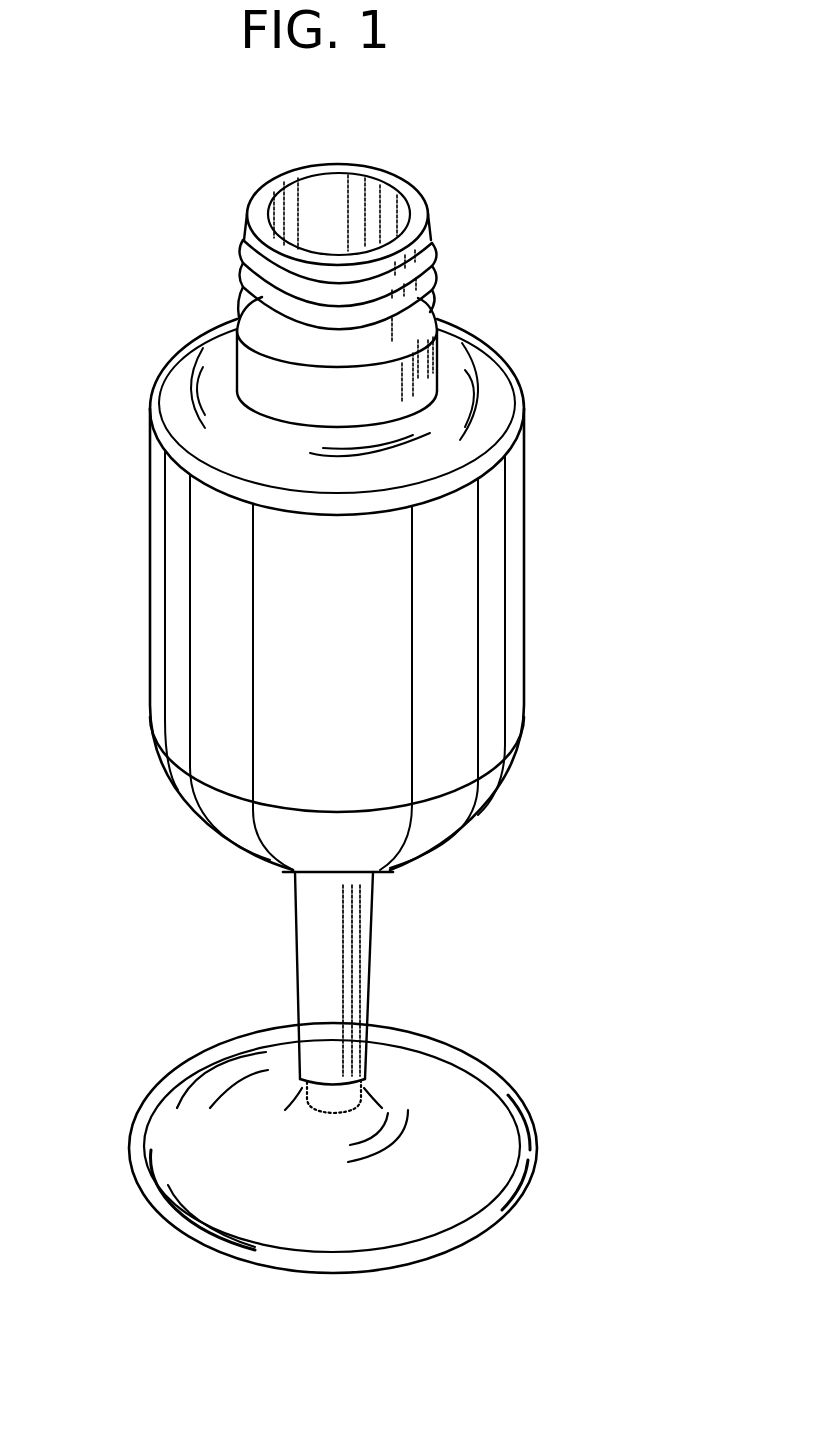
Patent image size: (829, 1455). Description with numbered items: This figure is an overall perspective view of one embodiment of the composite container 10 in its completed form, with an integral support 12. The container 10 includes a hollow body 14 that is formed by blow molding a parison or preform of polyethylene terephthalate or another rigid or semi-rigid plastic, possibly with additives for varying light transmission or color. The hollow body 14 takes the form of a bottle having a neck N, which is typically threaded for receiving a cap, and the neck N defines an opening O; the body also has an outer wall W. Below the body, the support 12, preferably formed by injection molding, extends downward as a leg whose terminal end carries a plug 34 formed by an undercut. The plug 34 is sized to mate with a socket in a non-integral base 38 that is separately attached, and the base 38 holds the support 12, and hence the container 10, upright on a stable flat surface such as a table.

The container 10 is at (545, 213).
The support 12 is at (382, 950).
The hollow body 14 is at (550, 503).
The plug 34 is at (365, 1090).
The non-integral base 38 is at (418, 1192).
The neck N is at (308, 275).
The opening O is at (345, 195).
The outer wall W is at (352, 668).